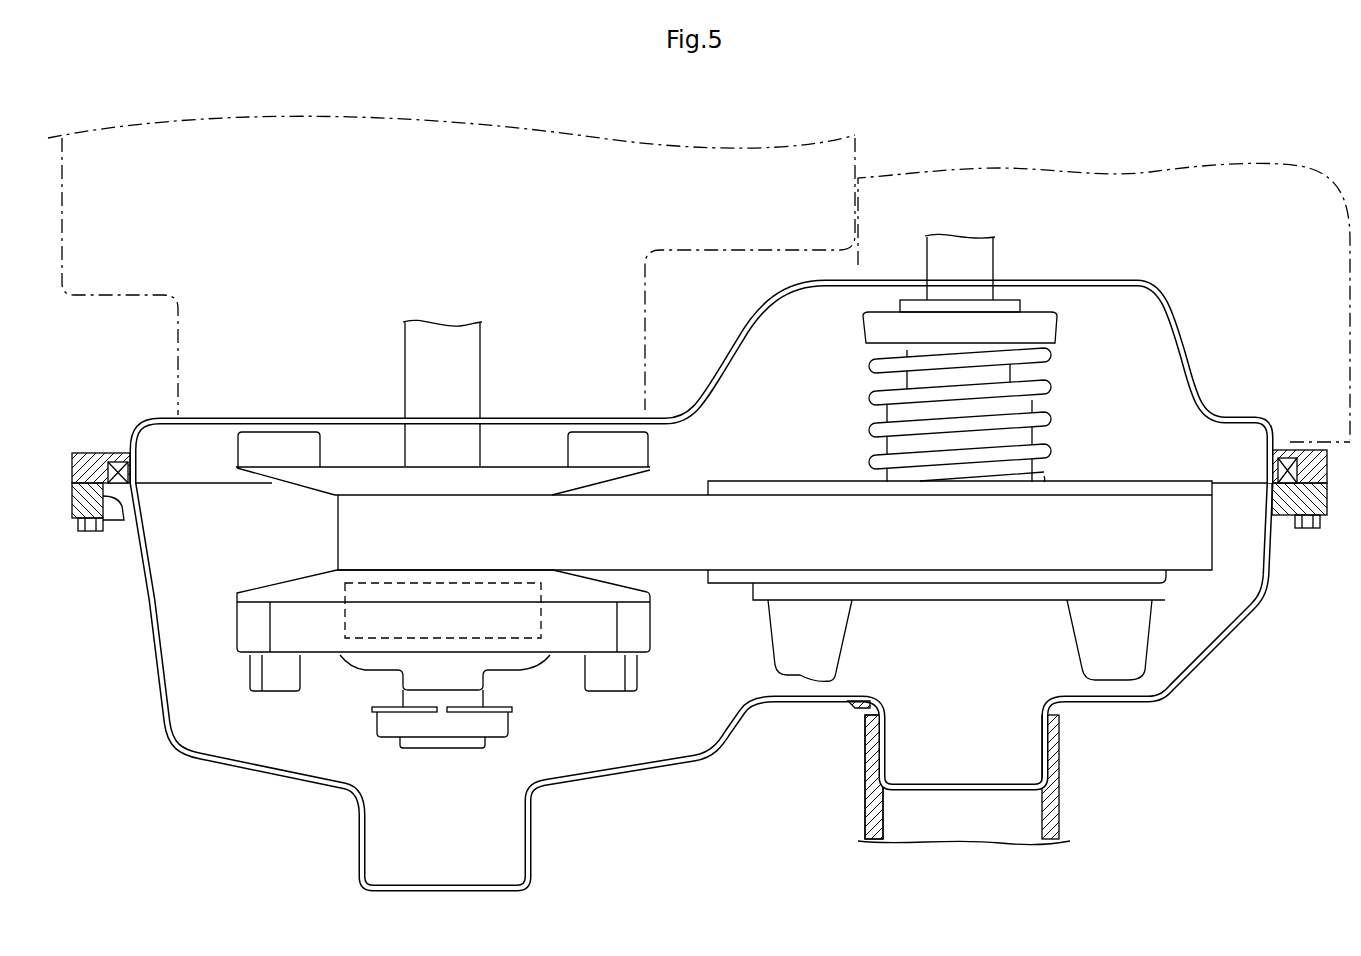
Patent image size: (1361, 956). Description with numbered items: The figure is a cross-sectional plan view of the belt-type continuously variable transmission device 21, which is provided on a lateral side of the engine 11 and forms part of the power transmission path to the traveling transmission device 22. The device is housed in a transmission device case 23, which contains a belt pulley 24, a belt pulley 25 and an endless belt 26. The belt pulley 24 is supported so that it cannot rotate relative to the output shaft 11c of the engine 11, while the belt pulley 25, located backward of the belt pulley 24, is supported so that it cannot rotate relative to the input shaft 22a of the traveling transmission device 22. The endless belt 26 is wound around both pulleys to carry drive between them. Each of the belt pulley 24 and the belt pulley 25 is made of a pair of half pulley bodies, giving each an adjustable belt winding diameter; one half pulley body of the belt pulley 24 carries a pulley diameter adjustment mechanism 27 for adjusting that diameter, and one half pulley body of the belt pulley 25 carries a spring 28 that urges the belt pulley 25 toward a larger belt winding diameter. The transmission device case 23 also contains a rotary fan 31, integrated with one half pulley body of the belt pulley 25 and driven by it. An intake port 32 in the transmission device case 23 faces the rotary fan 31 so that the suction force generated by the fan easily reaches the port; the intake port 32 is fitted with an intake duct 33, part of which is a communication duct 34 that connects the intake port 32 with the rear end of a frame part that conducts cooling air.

The engine 11 is at (105, 295).
The output shaft 11c is at (406, 357).
The belt-type continuously variable transmission device 21 is at (1168, 750).
The traveling transmission device 22 is at (860, 265).
The input shaft 22a is at (992, 240).
The transmission device case 23 is at (1236, 644).
The belt pulley 24 is at (245, 623).
The belt pulley 25 is at (1090, 483).
The endless belt 26 is at (678, 522).
The pulley diameter adjustment mechanism 27 is at (345, 597).
The spring 28 is at (1045, 372).
The rotary fan 31 is at (1127, 642).
The intake port 32 is at (1040, 735).
The intake duct 33 is at (874, 777).
The communication duct 34 is at (868, 812).